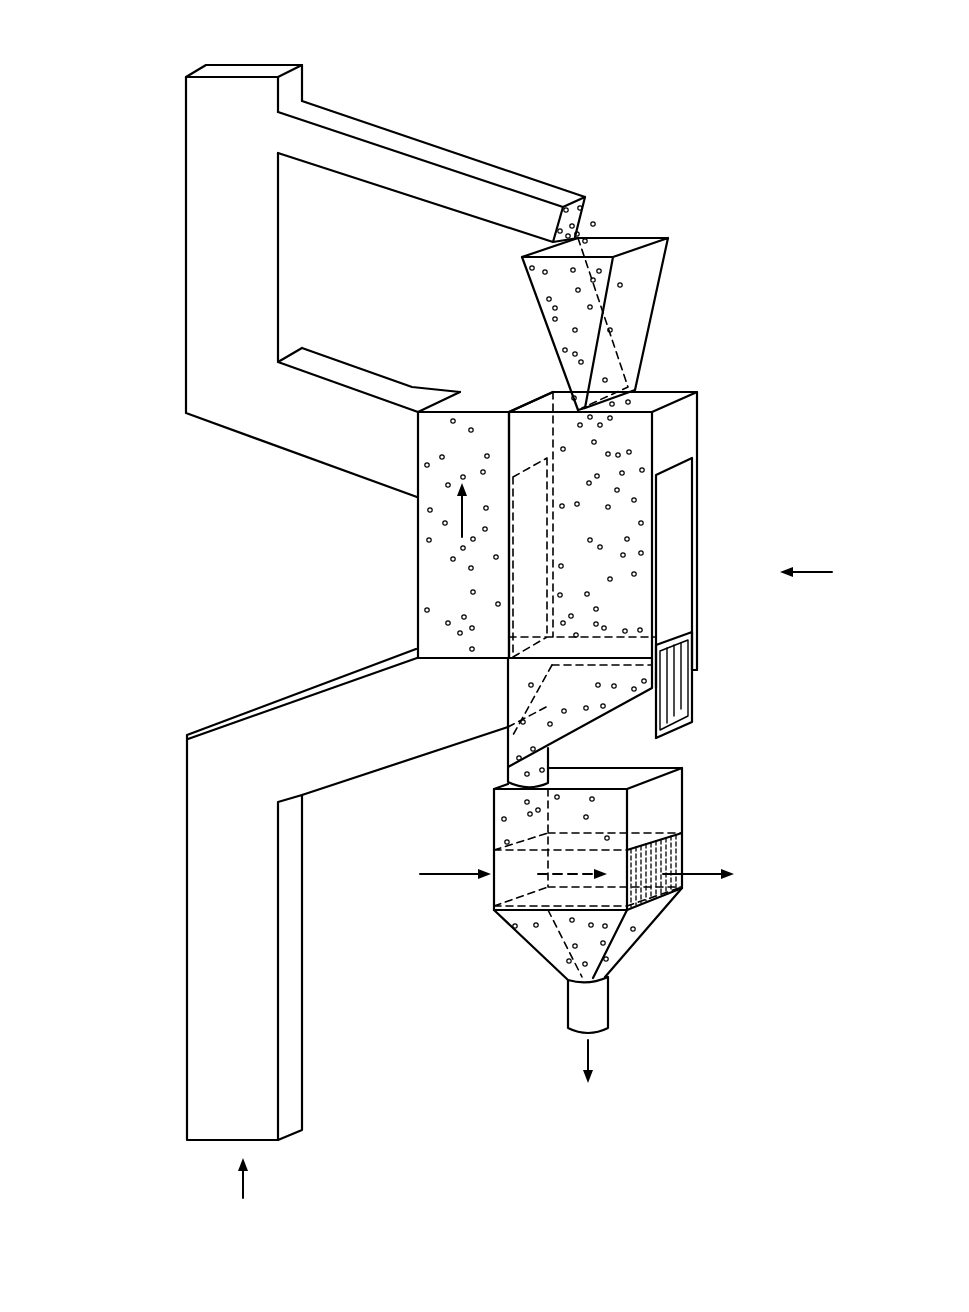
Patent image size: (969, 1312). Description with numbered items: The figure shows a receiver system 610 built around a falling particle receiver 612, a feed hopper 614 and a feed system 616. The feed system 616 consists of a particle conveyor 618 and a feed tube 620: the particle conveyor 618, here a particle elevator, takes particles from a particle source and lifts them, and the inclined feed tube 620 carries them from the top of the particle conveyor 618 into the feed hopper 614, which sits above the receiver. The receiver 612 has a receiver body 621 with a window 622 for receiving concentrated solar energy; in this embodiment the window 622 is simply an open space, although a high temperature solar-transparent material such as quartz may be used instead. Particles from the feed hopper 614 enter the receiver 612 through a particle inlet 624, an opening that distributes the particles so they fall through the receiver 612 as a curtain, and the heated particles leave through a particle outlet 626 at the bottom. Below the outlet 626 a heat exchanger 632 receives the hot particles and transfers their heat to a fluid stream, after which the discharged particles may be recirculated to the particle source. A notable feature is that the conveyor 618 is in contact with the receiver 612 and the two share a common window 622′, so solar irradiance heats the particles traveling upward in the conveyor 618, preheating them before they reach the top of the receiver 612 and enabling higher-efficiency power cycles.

The receiver system 610 is at (133, 53).
The falling particle receiver 612 is at (699, 400).
The feed hopper 614 is at (664, 236).
The feed system 616 is at (380, 92).
The particle conveyor 618 is at (185, 266).
The feed tube 620 is at (467, 160).
The receiver body 621 is at (570, 406).
The window 622 is at (688, 509).
The common window 622′ is at (518, 552).
The particle inlet 624 is at (655, 393).
The particle outlet 626 is at (550, 757).
The heat exchanger 632 is at (683, 815).